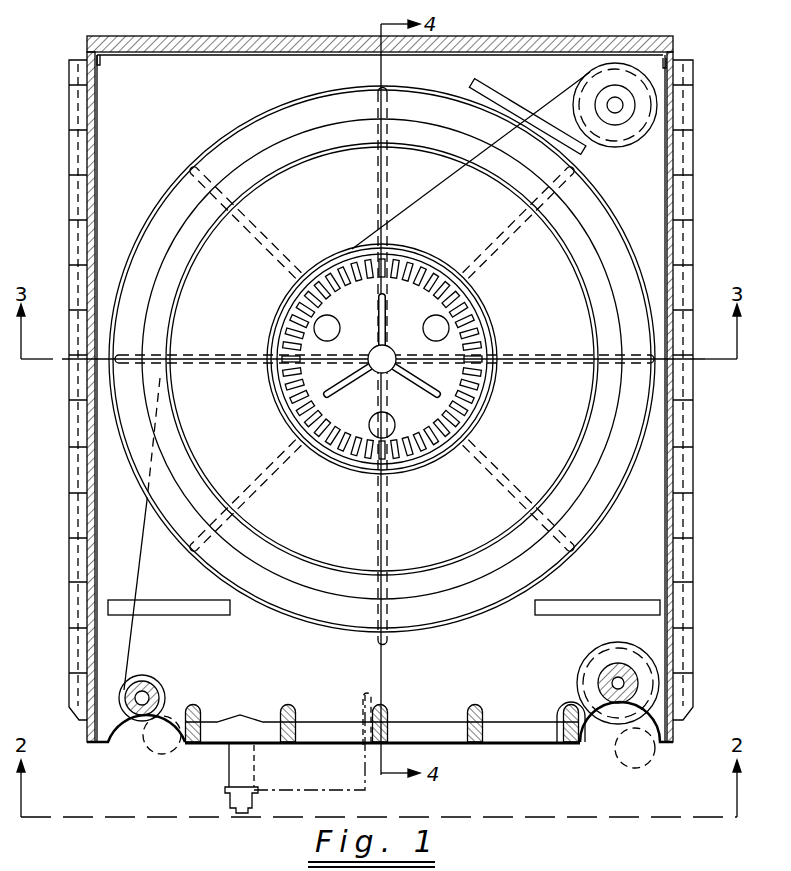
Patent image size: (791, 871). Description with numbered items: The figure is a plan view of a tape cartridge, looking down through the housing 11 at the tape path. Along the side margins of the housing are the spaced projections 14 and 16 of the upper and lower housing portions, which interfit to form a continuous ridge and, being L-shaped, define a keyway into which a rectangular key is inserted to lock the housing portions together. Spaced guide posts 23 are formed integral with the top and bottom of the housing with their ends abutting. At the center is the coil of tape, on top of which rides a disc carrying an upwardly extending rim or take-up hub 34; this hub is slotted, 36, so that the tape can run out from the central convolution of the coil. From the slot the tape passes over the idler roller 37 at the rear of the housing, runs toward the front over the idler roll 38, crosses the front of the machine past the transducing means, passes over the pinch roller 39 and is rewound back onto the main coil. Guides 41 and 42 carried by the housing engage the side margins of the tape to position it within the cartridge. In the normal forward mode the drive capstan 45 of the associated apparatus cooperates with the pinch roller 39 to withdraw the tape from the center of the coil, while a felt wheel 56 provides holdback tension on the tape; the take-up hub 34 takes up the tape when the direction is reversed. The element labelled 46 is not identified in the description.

The housing 11 is at (408, 389).
The spaced projections 14 is at (688, 642).
The spaced projections 16 is at (696, 594).
The guide posts 23 is at (488, 735).
The take-up hub 34 is at (580, 277).
The slot 36 is at (478, 163).
The idler roller 37 is at (630, 83).
The idler roll 38 is at (586, 660).
The pinch roller 39 is at (160, 682).
The guide 41 is at (511, 101).
The guide 42 is at (580, 605).
The drive capstan 45 is at (148, 745).
The bolt 46 is at (234, 752).
The felt wheel 56 is at (560, 703).